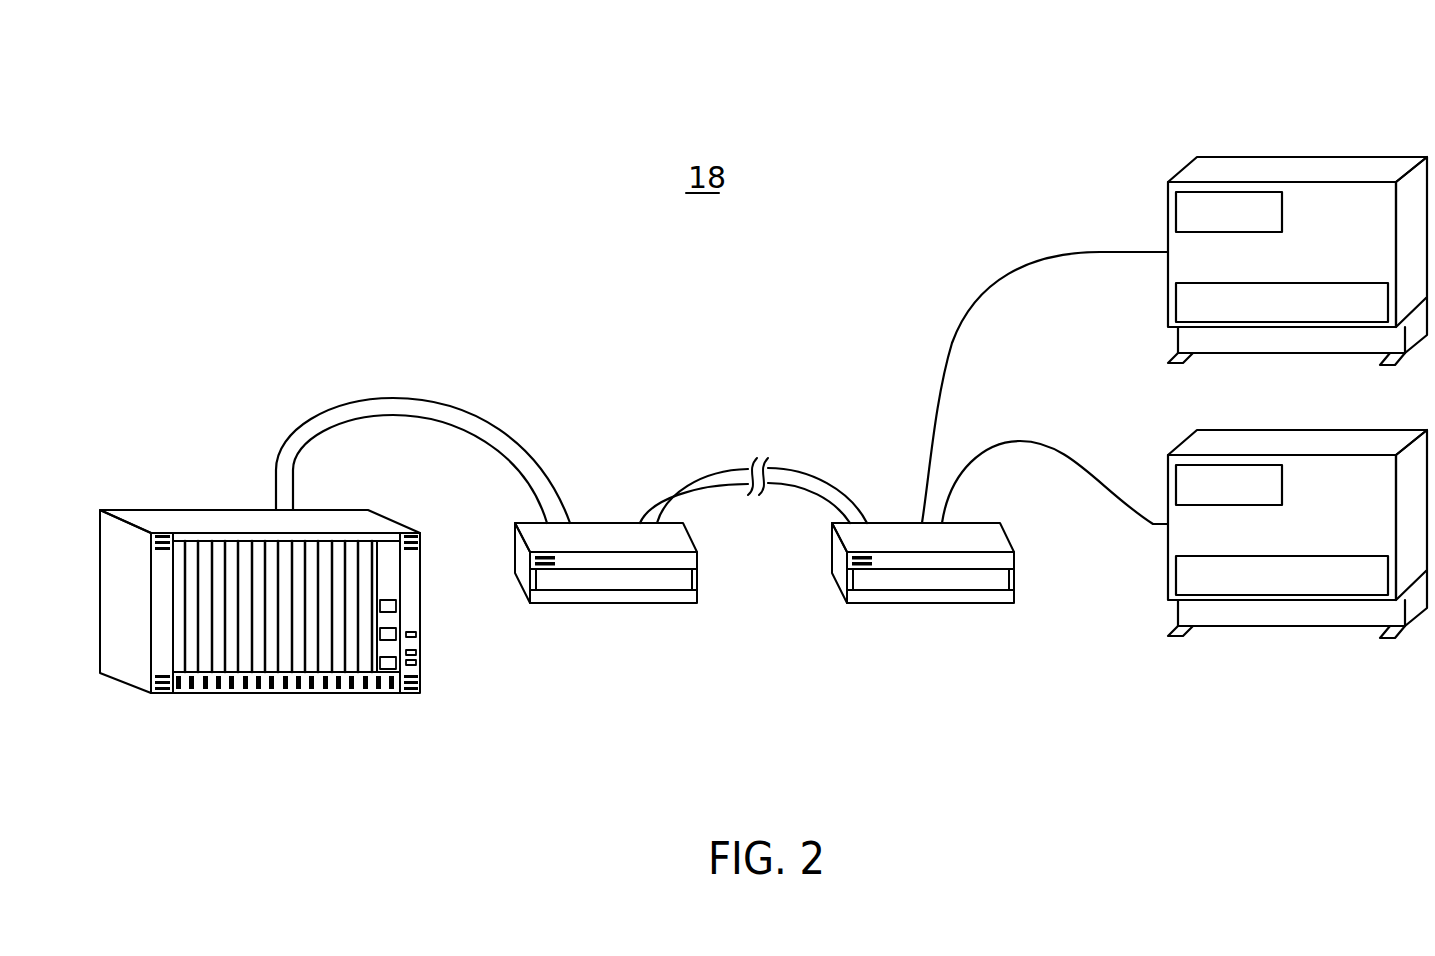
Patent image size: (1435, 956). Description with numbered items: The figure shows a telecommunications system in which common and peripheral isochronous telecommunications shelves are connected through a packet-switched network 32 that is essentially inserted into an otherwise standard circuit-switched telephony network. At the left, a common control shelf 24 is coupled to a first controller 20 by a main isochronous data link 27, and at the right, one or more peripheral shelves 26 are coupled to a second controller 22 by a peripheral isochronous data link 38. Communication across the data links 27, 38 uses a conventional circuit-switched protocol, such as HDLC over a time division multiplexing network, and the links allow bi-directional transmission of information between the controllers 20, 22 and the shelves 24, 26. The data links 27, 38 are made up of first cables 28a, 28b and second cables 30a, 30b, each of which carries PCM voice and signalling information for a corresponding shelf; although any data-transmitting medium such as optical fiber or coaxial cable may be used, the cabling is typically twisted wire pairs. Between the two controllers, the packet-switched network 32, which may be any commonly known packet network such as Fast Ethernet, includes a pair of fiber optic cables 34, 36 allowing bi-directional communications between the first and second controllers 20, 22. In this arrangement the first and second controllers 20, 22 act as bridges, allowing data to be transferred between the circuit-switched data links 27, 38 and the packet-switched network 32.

The first controller 20 is at (615, 605).
The second controller 22 is at (930, 605).
The common control shelf 24 is at (222, 697).
The peripheral shelf 26 is at (1294, 120).
The main isochronous data link 27 is at (369, 370).
The first cable 28a is at (455, 402).
The first cable 28b is at (950, 345).
The second cable 30a is at (477, 428).
The second cable 30b is at (1000, 445).
The packet-switched network 32 is at (735, 433).
The fiber optic cable 34 is at (802, 475).
The fiber optic cable 36 is at (812, 490).
The peripheral isochronous data link 38 is at (1002, 253).